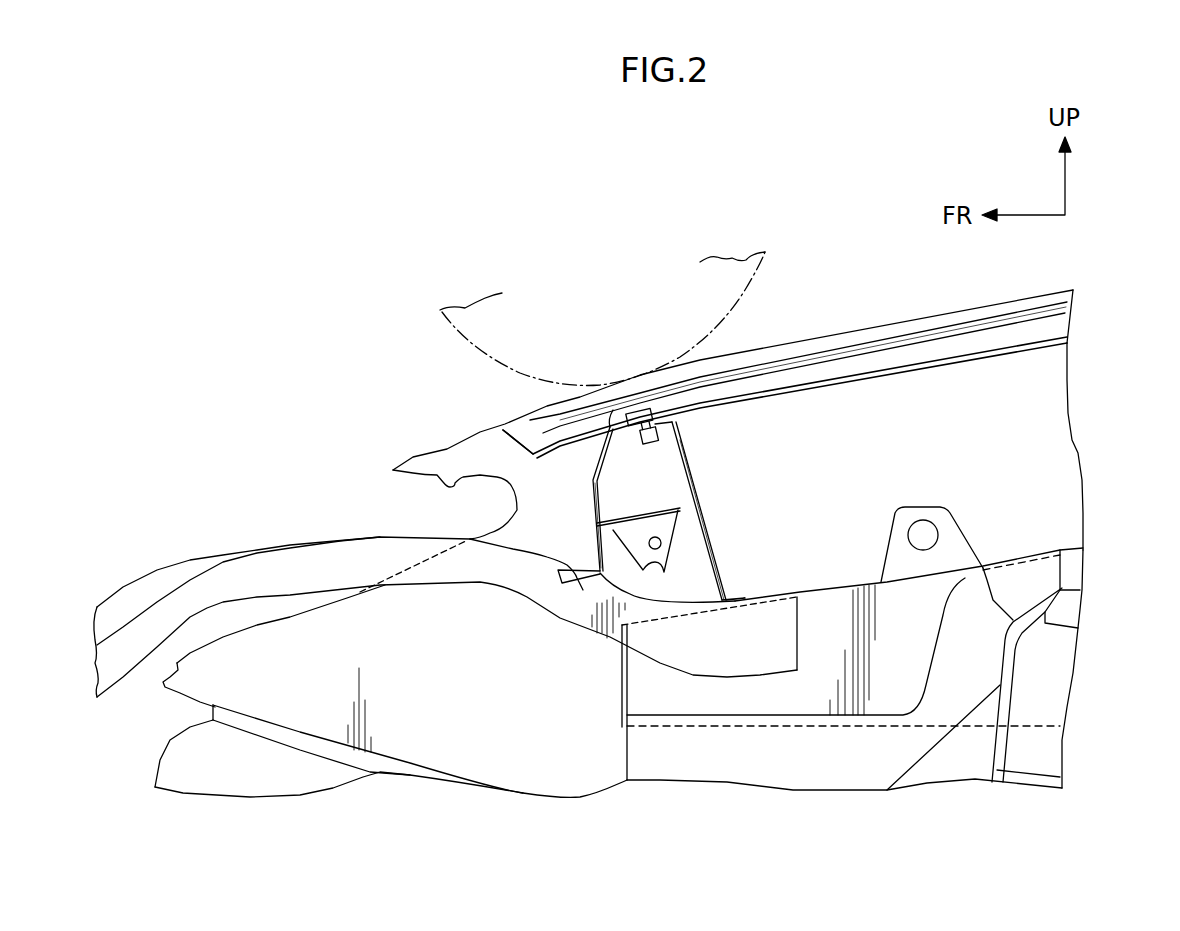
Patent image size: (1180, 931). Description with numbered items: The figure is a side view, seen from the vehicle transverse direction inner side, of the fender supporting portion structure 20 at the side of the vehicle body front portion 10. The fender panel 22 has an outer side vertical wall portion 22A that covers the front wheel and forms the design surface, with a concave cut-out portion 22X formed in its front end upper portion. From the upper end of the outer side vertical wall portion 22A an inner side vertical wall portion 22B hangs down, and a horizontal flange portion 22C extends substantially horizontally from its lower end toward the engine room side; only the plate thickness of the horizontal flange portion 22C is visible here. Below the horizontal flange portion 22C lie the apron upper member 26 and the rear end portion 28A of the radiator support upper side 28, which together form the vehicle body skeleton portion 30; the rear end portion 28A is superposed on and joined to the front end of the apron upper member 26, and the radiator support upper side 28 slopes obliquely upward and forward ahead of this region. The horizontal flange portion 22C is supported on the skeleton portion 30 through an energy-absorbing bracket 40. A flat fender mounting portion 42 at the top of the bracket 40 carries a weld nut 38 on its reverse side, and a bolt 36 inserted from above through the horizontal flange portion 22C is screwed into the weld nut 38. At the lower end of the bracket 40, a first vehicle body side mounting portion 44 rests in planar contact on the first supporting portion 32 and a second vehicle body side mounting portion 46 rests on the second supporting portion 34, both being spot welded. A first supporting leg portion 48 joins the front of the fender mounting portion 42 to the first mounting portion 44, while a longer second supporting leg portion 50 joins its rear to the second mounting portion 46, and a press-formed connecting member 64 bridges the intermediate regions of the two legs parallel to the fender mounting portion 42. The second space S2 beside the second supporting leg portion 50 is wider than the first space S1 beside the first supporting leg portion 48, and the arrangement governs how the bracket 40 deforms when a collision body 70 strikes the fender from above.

The vehicle body front portion 10 is at (527, 236).
The fender supporting portion structure 20 is at (536, 700).
The fender panel 22 is at (818, 316).
The outer side vertical wall portion 22A is at (1017, 407).
The inner side vertical wall portion 22B is at (1057, 327).
The horizontal flange portion 22C is at (968, 354).
The cut-out portion 22X is at (455, 485).
The apron upper member 26 is at (860, 562).
The radiator support upper side 28 is at (308, 524).
The rear end portion 28A is at (677, 650).
The vehicle body skeleton portion 30 is at (838, 486).
The first supporting portion 32 is at (560, 567).
The second supporting portion 34 is at (742, 599).
The bolt 36 is at (647, 398).
The weld nut 38 is at (673, 427).
The bracket 40 is at (745, 452).
The fender mounting portion 42 is at (520, 414).
The first vehicle body side mounting portion 44 is at (570, 570).
The second vehicle body side mounting portion 46 is at (732, 597).
The first supporting leg portion 48 is at (582, 486).
The second supporting leg portion 50 is at (720, 536).
The connecting member 64 is at (633, 504).
The collision body 70 is at (460, 331).
The first space S1 is at (565, 516).
The second space S2 is at (813, 464).